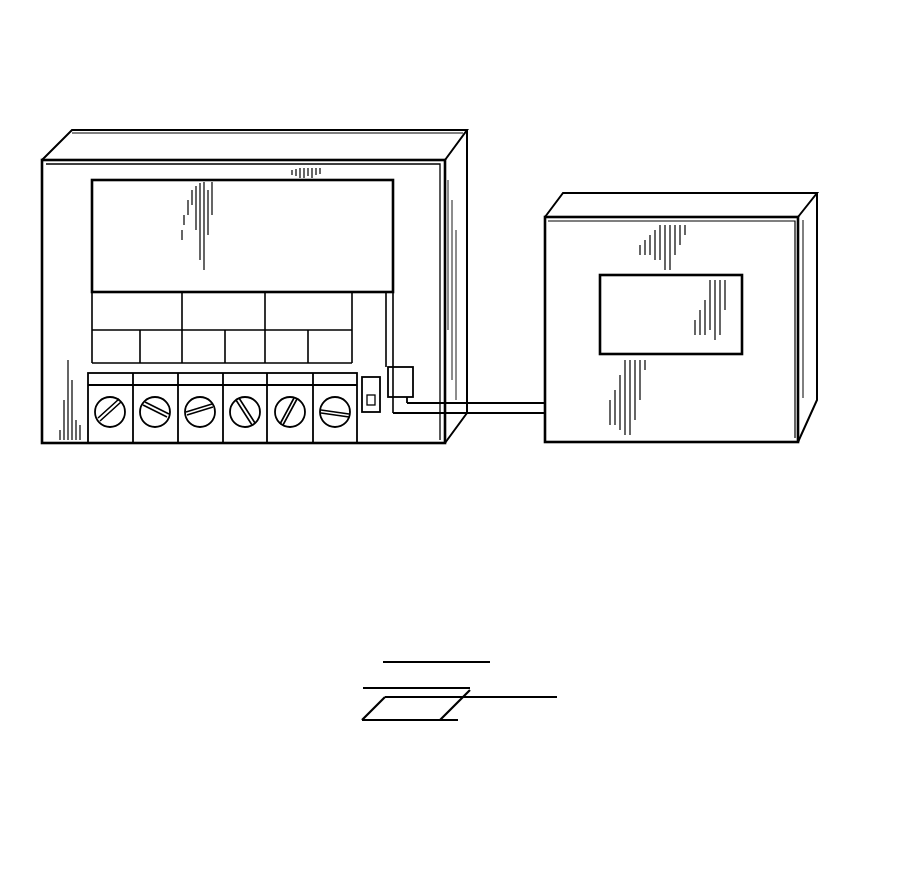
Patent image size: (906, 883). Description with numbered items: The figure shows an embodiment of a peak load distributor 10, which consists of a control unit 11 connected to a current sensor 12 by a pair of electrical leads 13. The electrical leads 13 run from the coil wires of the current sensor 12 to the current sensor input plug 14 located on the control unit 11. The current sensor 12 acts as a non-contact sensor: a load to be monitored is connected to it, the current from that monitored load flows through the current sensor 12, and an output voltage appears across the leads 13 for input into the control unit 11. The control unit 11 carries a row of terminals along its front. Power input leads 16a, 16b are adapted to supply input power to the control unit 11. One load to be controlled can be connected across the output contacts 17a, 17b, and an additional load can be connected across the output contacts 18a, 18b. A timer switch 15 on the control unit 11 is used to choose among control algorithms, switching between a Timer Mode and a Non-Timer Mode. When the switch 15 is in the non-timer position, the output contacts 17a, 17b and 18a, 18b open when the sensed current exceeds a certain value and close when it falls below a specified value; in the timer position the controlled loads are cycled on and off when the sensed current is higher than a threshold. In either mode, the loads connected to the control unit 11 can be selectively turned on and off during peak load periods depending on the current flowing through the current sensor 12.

The peak load distributor 10 is at (498, 152).
The control unit 11 is at (265, 108).
The current sensor 12 is at (715, 172).
The electrical leads 13 is at (490, 403).
The current sensor input plug 14 is at (410, 372).
The timer switch 15 is at (368, 412).
The power input lead 16a is at (108, 435).
The power input lead 16b is at (155, 435).
The output contact 17a is at (200, 435).
The output contact 17b is at (243, 435).
The output contact 18a is at (283, 435).
The output contact 18b is at (340, 435).